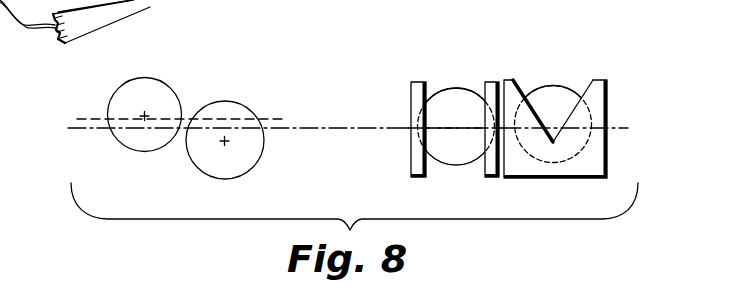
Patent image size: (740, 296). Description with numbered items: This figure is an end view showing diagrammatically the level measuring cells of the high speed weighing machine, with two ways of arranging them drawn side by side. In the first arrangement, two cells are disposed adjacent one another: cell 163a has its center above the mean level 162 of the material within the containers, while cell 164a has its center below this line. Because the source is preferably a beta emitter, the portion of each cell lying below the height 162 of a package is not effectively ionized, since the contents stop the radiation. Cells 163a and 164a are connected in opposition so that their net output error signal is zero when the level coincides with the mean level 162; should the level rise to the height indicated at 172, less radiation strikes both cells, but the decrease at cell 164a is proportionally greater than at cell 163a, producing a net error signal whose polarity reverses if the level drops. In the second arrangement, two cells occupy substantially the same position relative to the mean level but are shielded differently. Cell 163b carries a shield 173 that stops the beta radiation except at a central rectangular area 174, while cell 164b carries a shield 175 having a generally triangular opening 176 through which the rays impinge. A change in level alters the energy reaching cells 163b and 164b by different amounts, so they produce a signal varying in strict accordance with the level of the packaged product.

The mean level line 162 is at (322, 127).
The raised level height 172 is at (86, 119).
The level measuring cell 163a is at (116, 90).
The level measuring cell 164a is at (230, 102).
The level measuring cell 163b is at (442, 88).
The level measuring cell 164b is at (548, 86).
The shield 173 is at (490, 177).
The central rectangular area 174 is at (465, 112).
The shield 175 is at (607, 107).
The triangular opening 176 is at (560, 107).